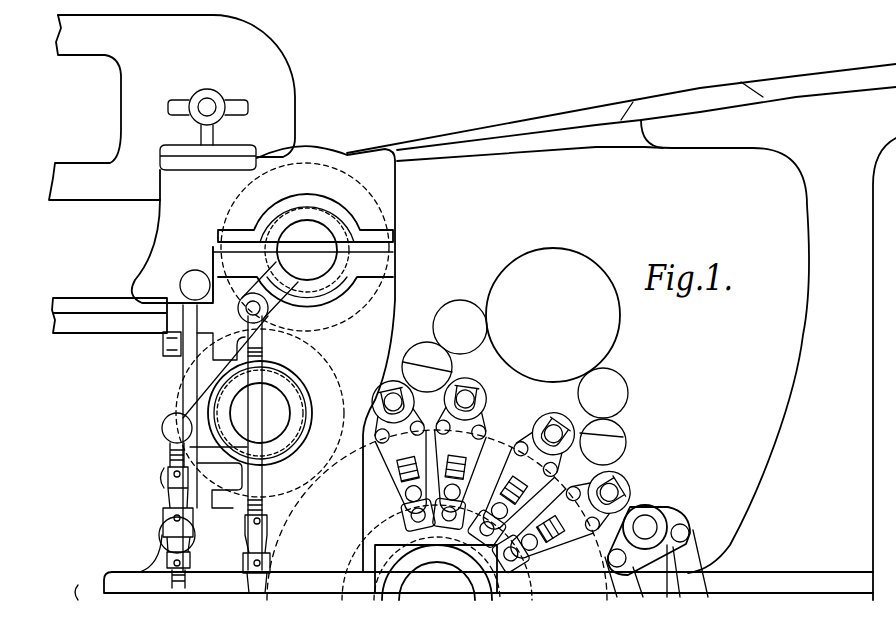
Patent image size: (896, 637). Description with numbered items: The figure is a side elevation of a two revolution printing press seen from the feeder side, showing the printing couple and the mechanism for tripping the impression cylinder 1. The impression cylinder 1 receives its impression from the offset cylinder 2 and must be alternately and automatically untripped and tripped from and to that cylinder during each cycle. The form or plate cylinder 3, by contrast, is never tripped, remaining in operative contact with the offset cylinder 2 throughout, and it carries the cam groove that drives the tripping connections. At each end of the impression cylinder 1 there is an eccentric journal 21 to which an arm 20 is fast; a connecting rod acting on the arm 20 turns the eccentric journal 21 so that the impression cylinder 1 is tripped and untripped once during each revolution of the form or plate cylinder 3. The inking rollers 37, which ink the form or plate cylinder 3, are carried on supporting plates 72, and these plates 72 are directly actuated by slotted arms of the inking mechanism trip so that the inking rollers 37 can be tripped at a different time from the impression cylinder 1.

The impression cylinder 1 is at (372, 197).
The offset cylinder 2 is at (345, 400).
The form or plate cylinder 3 is at (298, 512).
The arm 20 is at (267, 280).
The eccentric journal 21 is at (267, 243).
The inking rollers 37 is at (410, 361).
The supporting plates 72 is at (502, 479).